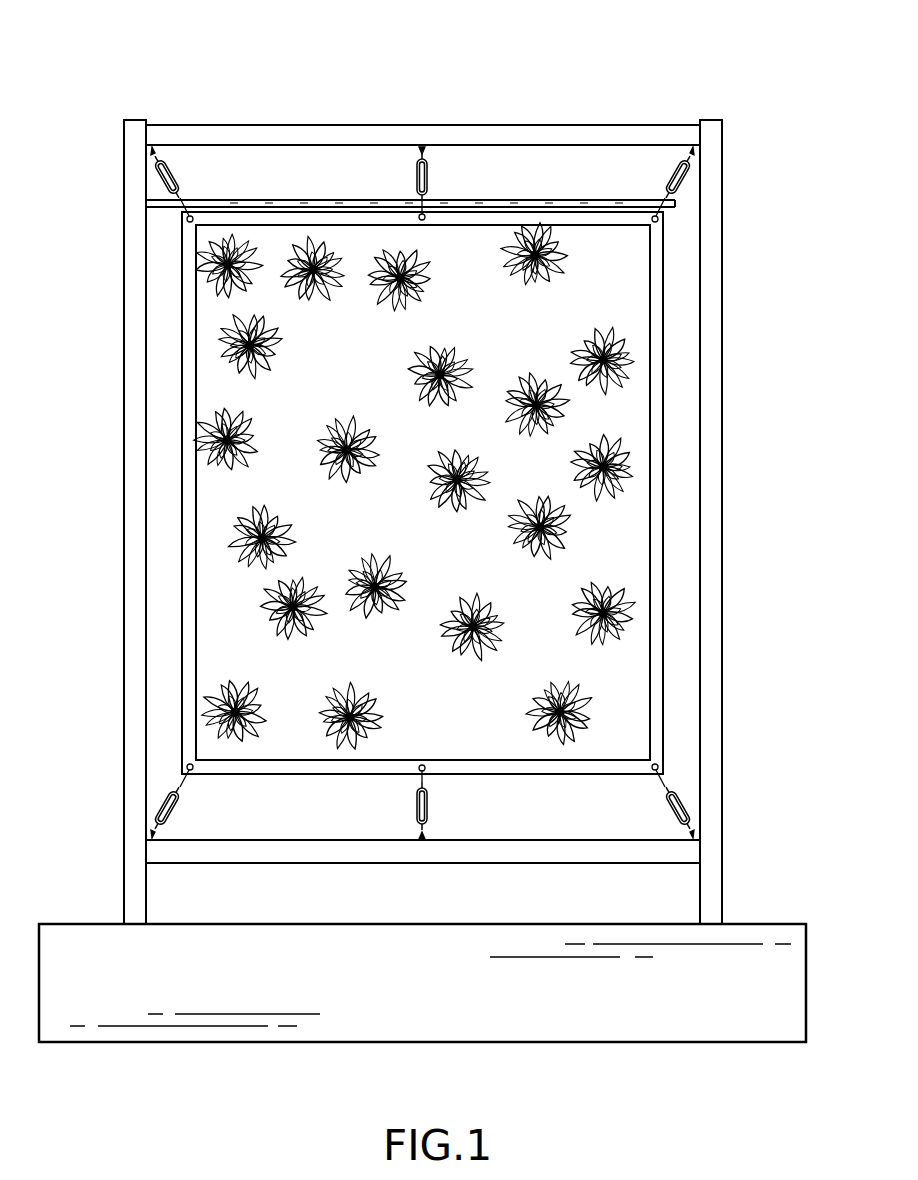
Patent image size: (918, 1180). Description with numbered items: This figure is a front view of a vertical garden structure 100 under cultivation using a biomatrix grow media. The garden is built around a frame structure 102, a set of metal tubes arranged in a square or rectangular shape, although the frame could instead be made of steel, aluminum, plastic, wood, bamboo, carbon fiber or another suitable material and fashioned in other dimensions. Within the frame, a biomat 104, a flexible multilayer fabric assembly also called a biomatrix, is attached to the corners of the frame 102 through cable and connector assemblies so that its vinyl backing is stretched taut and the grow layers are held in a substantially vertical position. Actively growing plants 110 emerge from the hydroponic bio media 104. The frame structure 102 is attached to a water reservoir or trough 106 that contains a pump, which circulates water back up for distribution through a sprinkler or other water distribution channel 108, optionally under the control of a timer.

The vertical garden structure 100 is at (733, 46).
The frame structure 102 is at (722, 222).
The biomat grow media 104 is at (632, 307).
The water reservoir 106 is at (680, 1045).
The water distribution channel 108 is at (543, 200).
The plants 110 is at (537, 405).